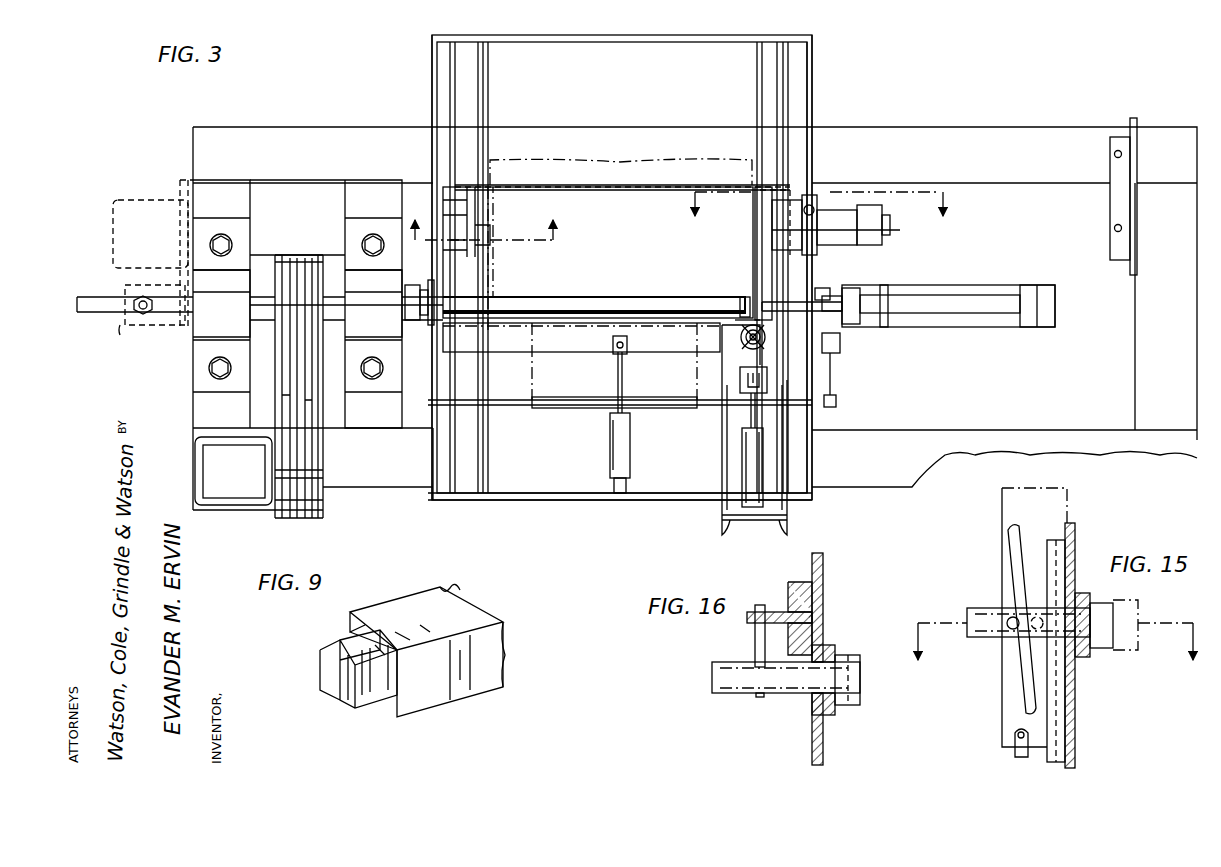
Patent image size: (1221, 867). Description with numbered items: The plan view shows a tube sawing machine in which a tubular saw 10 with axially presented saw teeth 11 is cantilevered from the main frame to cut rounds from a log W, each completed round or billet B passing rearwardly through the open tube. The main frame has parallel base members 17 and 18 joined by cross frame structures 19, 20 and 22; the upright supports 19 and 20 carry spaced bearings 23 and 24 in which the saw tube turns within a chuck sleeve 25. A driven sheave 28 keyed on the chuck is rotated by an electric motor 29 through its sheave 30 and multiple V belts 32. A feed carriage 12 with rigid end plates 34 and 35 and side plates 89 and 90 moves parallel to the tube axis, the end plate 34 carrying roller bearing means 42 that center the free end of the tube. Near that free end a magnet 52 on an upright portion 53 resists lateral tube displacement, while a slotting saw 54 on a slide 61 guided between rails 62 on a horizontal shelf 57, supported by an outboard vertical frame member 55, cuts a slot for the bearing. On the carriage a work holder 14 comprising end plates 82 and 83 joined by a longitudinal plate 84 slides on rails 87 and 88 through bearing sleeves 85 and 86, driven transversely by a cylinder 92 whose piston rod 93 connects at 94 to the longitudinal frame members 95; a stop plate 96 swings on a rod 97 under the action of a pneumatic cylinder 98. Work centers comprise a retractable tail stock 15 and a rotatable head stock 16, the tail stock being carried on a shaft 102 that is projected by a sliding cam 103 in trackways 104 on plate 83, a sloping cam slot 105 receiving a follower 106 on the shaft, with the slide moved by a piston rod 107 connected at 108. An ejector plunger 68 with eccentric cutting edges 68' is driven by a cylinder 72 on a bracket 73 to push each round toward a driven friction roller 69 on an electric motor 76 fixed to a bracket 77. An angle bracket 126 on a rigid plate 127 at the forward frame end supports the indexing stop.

In FIG. 3, the tubular saw 10 is at (554, 297).
In FIG. 3, the saw teeth 11 is at (748, 290).
In FIG. 3, the feed carriage 12 is at (378, 510).
In FIG. 3, the work holder 14 is at (512, 172).
In FIG. 3, the tail stock 15 is at (498, 268).
In FIG. 16, the tail stock 15 is at (858, 690).
In FIG. 15, the tail stock 15 is at (1105, 652).
In FIG. 3, the head stock 16 is at (770, 235).
In FIG. 15, the head stock 16 is at (1052, 659).
In FIG. 3, the supporting base member 17 is at (886, 480).
In FIG. 3, the supporting base member 18 is at (1004, 127).
In FIG. 3, the cross frame structure 19 is at (223, 185).
In FIG. 3, the cross frame structure 20 is at (388, 185).
In FIG. 3, the cross frame structure 22 is at (1140, 398).
In FIG. 3, the bearing 23 is at (228, 306).
In FIG. 3, the bearing 24 is at (378, 308).
In FIG. 3, the chuck sleeve 25 is at (256, 315).
In FIG. 3, the driven sheave 28 is at (277, 252).
In FIG. 3, the electric motor 29 is at (240, 495).
In FIG. 3, the sheave 30 is at (315, 518).
In FIG. 3, the V belts 32 is at (298, 400).
In FIG. 3, the end plate 34 is at (432, 90).
In FIG. 3, the end plate 35 is at (812, 96).
In FIG. 3, the bearing means 42 is at (425, 283).
In FIG. 3, the magnet 52 is at (713, 308).
In FIG. 3, the upright portion 53 is at (718, 362).
In FIG. 3, the slotting saw 54 is at (768, 348).
In FIG. 3, the outboard vertical frame member 55 is at (742, 520).
In FIG. 3, the horizontal shelf 57 is at (735, 484).
In FIG. 3, the slide 61 is at (745, 412).
In FIG. 3, the guide rails 62 is at (740, 448).
In FIG. 3, the ejector plunger 68 is at (817, 320).
In FIG. 9, the ejector plunger 68 is at (435, 652).
In FIG. 9, the cutting edges 68' is at (333, 669).
In FIG. 3, the friction roller 69 is at (116, 330).
In FIG. 3, the cylinder 72 is at (950, 305).
In FIG. 3, the shelf-like bracket 73 is at (995, 327).
In FIG. 3, the electric motor 76 is at (113, 233).
In FIG. 3, the bracket 77 is at (190, 180).
In FIG. 3, the end plate 82 is at (470, 213).
In FIG. 3, the end plate 83 is at (758, 213).
In FIG. 16, the end plate 83 is at (823, 572).
In FIG. 15, the end plate 83 is at (1078, 752).
In FIG. 3, the longitudinal plate 84 is at (656, 185).
In FIG. 3, the bearing sleeve 85 is at (470, 285).
In FIG. 3, the bearing sleeve 86 is at (755, 245).
In FIG. 3, the guide rail 87 is at (470, 88).
In FIG. 3, the guide rail 88 is at (762, 78).
In FIG. 3, the carriage side plate 89 is at (580, 495).
In FIG. 3, the carriage side plate 90 is at (605, 35).
In FIG. 3, the cylinder 92 is at (610, 450).
In FIG. 3, the piston rod 93 is at (616, 380).
In FIG. 3, the connection 94 is at (612, 347).
In FIG. 3, the longitudinal frame members 95 is at (516, 345).
In FIG. 3, the plate 96 is at (562, 408).
In FIG. 3, the rod 97 is at (496, 405).
In FIG. 3, the pneumatic cylinder 98 is at (840, 343).
In FIG. 16, the shaft 102 is at (712, 677).
In FIG. 15, the shaft 102 is at (975, 612).
In FIG. 16, the sliding cam 103 is at (775, 612).
In FIG. 15, the sliding cam 103 is at (1007, 718).
In FIG. 16, the trackways 104 is at (800, 580).
In FIG. 15, the trackways 104 is at (1062, 722).
In FIG. 15, the cam slot 105 is at (1020, 683).
In FIG. 16, the follower 106 is at (755, 640).
In FIG. 15, the follower 106 is at (1013, 617).
In FIG. 15, the piston rod 107 is at (1012, 752).
In FIG. 15, the connection 108 is at (1017, 740).
In FIG. 3, the angle bracket 126 is at (1110, 252).
In FIG. 3, the rigid plate 127 is at (1137, 268).
In FIG. 3, the round B is at (92, 290).
In FIG. 3, the log W is at (626, 155).